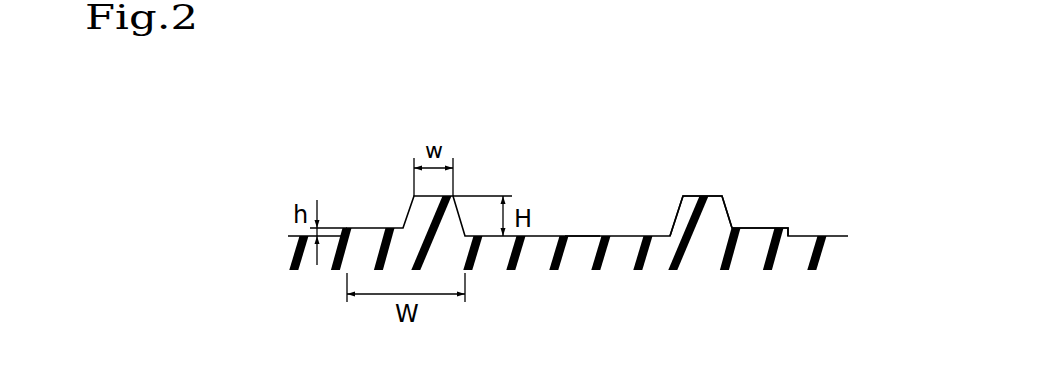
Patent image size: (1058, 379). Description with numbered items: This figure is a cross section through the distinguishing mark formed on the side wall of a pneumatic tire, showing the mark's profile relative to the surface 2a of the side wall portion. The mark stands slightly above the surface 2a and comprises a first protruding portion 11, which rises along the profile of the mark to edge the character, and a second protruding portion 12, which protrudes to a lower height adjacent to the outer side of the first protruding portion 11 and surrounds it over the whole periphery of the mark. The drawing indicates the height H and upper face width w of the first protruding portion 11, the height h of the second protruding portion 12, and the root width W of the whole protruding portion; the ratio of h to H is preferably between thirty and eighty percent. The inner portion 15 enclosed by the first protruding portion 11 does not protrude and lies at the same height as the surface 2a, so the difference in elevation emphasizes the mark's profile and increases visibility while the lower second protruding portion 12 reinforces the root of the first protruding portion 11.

The first protruding portion 11 is at (702, 196).
The second protruding portion 12 is at (760, 228).
The surface 2a is at (823, 236).
The inner portion 15 is at (572, 236).